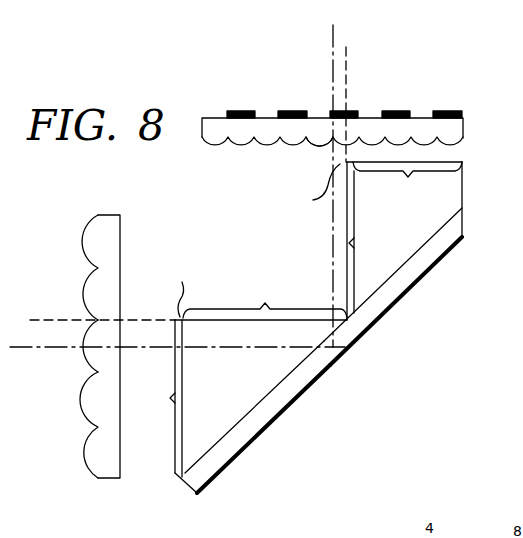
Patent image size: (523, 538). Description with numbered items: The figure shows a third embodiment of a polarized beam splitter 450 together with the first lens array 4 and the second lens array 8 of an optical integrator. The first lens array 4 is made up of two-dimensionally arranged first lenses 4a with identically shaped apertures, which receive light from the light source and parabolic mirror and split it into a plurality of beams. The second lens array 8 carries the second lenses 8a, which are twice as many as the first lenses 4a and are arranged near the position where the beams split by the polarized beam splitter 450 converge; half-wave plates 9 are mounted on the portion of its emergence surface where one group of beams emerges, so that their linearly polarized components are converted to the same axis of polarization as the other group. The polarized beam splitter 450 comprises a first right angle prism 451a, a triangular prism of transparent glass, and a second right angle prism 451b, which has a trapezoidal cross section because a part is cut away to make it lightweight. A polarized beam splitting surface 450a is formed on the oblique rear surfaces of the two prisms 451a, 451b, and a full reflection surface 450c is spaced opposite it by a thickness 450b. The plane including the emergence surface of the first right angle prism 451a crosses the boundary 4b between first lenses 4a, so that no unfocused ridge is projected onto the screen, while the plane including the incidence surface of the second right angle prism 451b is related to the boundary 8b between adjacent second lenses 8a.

The first lens array 4 is at (76, 321).
The first lenses 4a is at (84, 289).
The boundary 4b is at (96, 320).
The second lens array 8 is at (347, 125).
The second lenses 8a is at (215, 146).
The boundary 8b is at (332, 142).
The half-wave plates 9 is at (398, 110).
The polarized beam splitter 450 is at (326, 350).
The polarized beam splitting surface 450a is at (207, 453).
The thickness 450b is at (282, 418).
The full reflection surface 450c is at (408, 294).
The first right angle prism 451a is at (245, 382).
The second right angle prism 451b is at (427, 242).